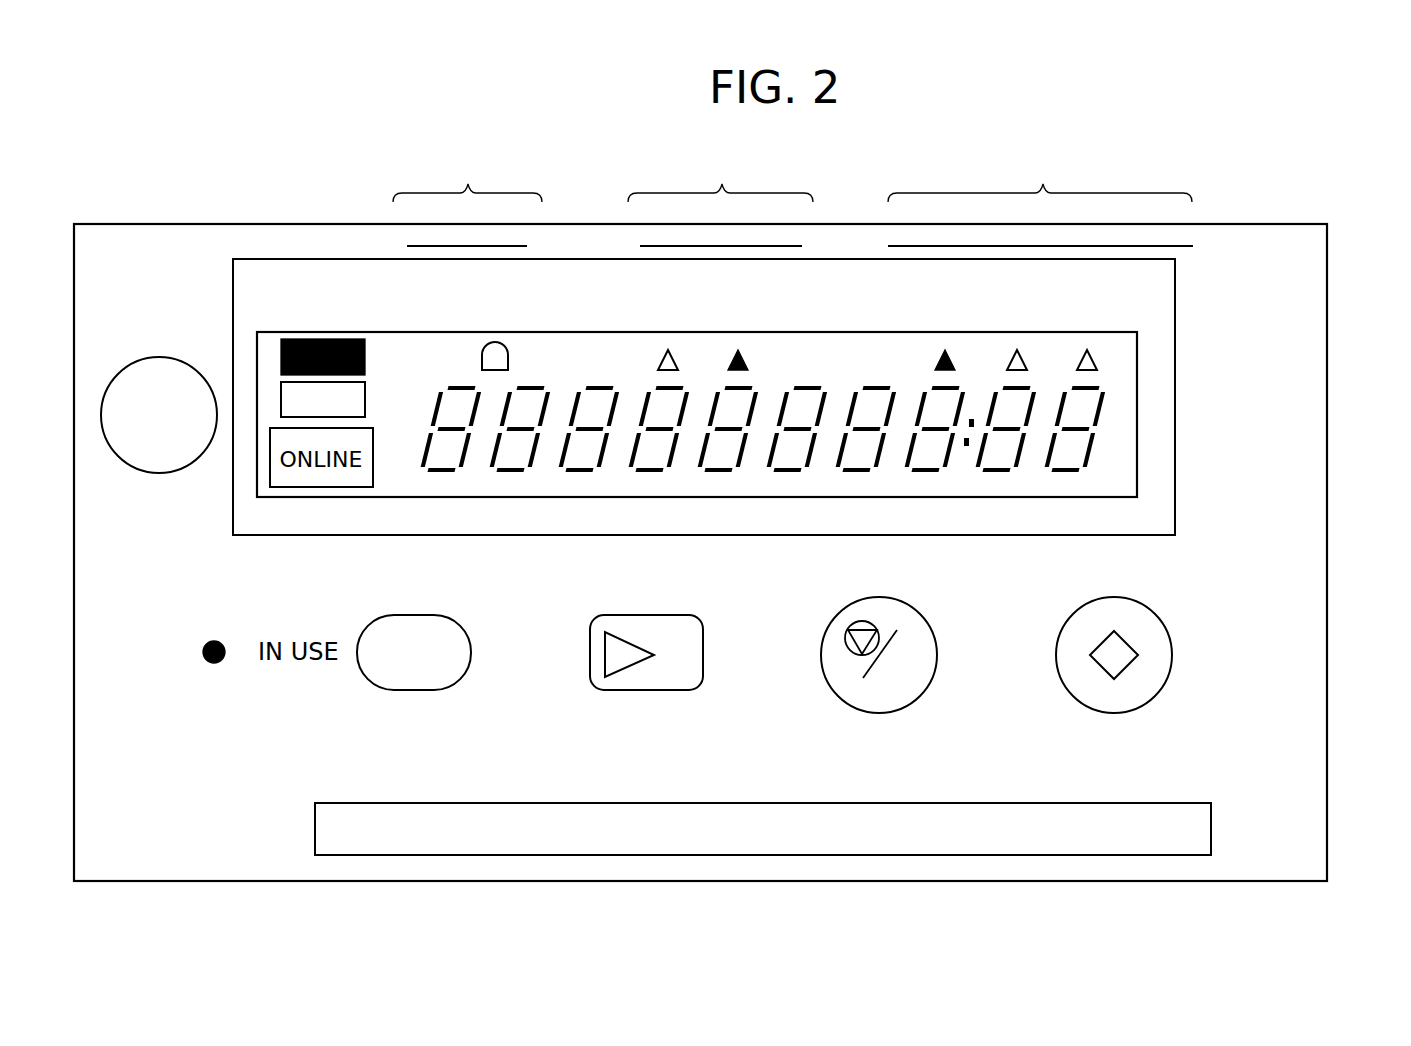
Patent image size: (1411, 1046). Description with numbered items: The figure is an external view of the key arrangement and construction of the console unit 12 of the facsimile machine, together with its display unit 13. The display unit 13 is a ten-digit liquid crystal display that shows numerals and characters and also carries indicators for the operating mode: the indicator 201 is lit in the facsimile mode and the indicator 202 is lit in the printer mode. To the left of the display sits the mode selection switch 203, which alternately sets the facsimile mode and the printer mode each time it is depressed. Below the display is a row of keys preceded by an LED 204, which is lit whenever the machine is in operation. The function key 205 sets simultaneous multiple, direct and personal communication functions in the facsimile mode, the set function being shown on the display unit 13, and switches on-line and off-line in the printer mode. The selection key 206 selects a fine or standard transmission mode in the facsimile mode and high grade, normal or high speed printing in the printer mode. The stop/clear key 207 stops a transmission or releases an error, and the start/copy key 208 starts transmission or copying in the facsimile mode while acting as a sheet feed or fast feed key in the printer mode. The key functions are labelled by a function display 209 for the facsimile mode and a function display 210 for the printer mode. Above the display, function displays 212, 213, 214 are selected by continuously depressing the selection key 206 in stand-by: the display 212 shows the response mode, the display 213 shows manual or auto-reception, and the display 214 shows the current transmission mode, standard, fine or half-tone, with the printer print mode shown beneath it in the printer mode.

The console unit 12 is at (1342, 276).
The display unit 13 is at (1137, 455).
The indicator 201 is at (281, 356).
The indicator 202 is at (281, 399).
The mode selection switch 203 is at (160, 474).
The LED 204 is at (215, 663).
The function key 205 is at (440, 615).
The selection key 206 is at (673, 615).
The stop/clear key 207 is at (925, 615).
The start/copy key 208 is at (1160, 615).
The function display 209 is at (1205, 776).
The function display 210 is at (315, 827).
The function display 212 is at (461, 222).
The function display 213 is at (720, 222).
The function display 214 is at (1039, 237).